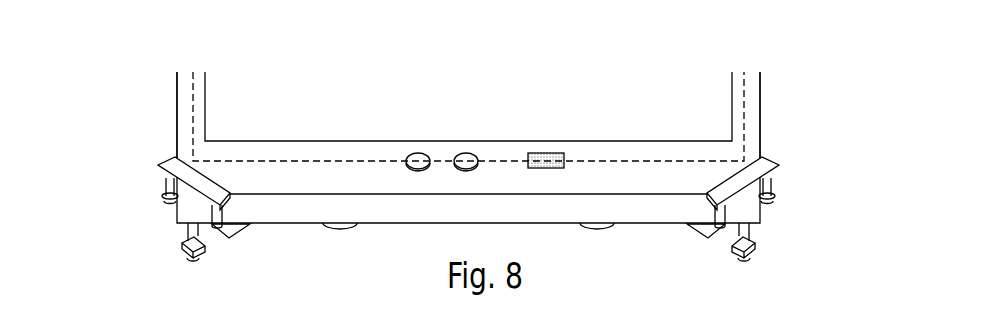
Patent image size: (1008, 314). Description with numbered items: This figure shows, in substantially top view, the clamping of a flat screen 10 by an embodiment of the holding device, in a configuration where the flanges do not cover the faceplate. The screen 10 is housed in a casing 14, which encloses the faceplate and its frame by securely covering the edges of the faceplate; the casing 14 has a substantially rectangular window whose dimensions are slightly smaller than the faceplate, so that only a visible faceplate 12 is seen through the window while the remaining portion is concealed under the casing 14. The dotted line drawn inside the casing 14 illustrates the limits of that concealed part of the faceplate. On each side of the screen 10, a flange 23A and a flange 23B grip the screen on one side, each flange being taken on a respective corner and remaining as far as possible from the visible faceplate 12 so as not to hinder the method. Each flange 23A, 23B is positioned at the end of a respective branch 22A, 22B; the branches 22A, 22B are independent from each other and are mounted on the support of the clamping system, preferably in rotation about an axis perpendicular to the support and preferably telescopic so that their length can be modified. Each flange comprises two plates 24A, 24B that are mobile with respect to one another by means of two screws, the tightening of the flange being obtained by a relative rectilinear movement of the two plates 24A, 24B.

The flat screen 10 is at (780, 96).
The visible faceplate 12 is at (468, 112).
The casing 14 is at (754, 64).
The branch 22A is at (775, 249).
The branch 22B is at (162, 249).
The flange 23A is at (790, 184).
The flange 23B is at (165, 101).
The plate 24A is at (790, 150).
The plate 24B is at (155, 153).